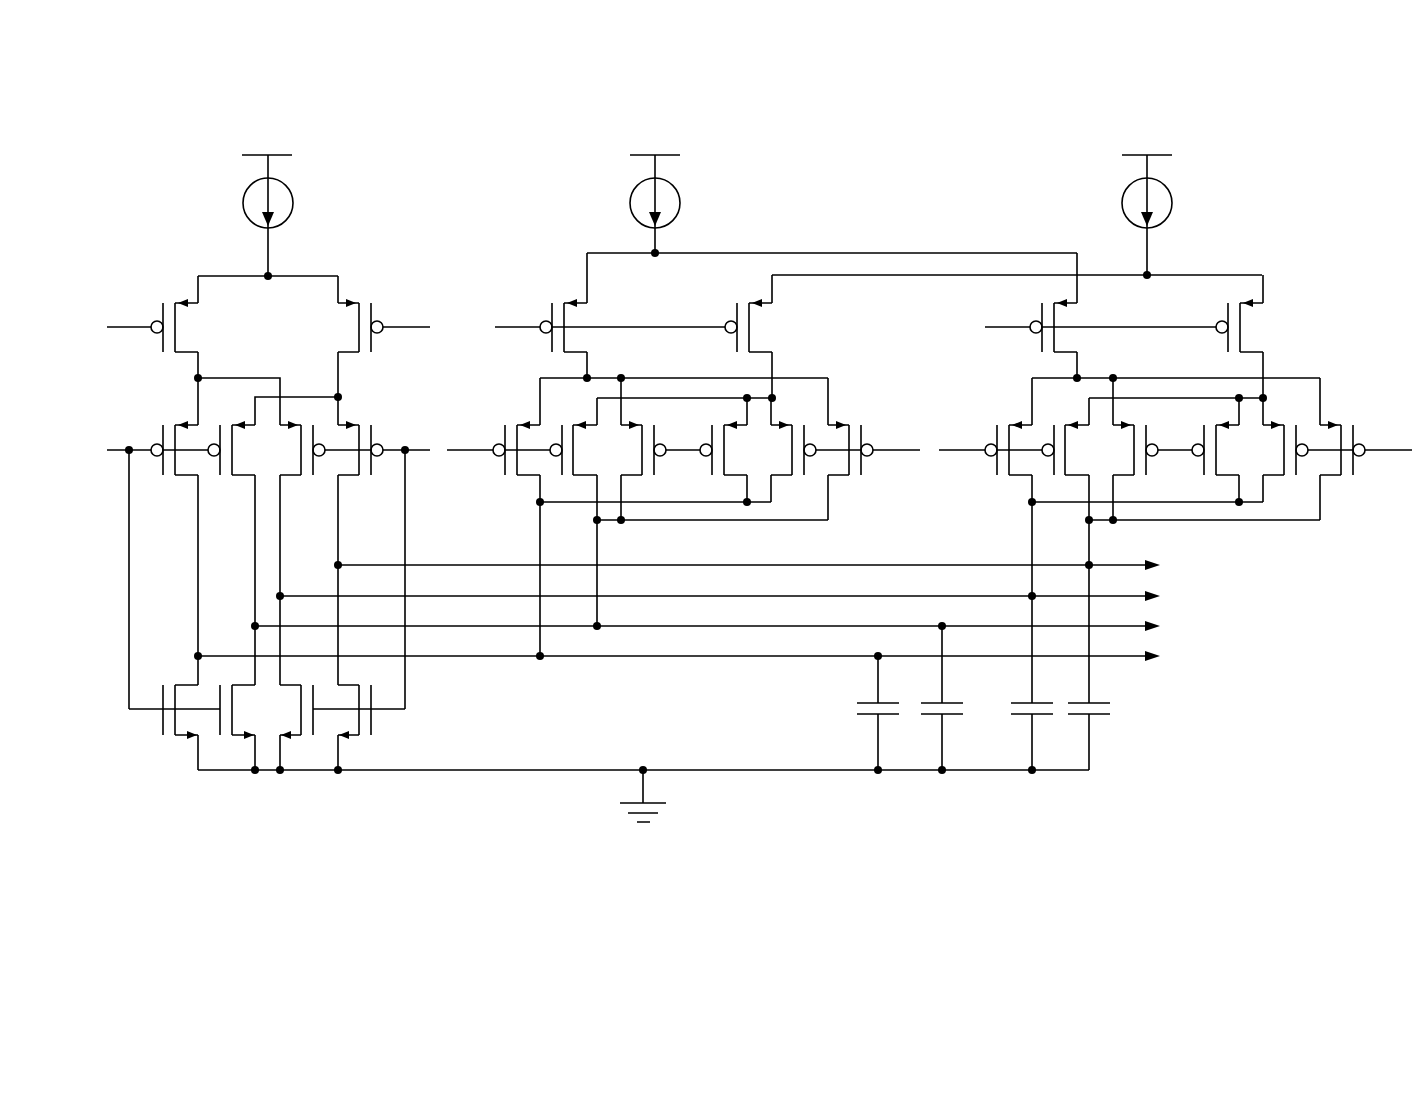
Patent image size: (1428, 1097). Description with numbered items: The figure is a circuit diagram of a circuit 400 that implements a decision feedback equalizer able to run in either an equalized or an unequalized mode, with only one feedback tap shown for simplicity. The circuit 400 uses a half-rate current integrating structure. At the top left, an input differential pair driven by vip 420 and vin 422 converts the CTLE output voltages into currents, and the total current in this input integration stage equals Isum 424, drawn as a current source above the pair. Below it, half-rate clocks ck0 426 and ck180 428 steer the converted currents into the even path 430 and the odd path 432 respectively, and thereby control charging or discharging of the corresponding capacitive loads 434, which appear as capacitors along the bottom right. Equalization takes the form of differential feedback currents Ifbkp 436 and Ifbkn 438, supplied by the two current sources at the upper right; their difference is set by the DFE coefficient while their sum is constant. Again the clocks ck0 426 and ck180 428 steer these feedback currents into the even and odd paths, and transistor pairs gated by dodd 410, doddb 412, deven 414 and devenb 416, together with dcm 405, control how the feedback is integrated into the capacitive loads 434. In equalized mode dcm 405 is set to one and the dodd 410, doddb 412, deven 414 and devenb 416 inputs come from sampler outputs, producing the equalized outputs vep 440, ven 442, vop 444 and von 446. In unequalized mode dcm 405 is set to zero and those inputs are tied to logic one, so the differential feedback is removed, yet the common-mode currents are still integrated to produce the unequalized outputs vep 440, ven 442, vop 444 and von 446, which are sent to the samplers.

The circuit 400 is at (1314, 172).
The dcm 405 is at (689, 457).
The dodd 410 is at (478, 457).
The doddb 412 is at (905, 457).
The deven 414 is at (967, 457).
The devenb 416 is at (1390, 457).
The vip 420 is at (353, 355).
The vin 422 is at (183, 355).
The Isum 424 is at (243, 203).
The ck0 426 is at (125, 455).
The ck180 428 is at (408, 455).
The even path 430 is at (198, 545).
The odd path 432 is at (338, 545).
The capacitive loads 434 is at (1120, 738).
The Ifbkp 436 is at (630, 203).
The Ifbkn 438 is at (1122, 203).
The vep 440 is at (744, 656).
The ven 442 is at (764, 626).
The vop 444 is at (782, 596).
The von 446 is at (800, 566).